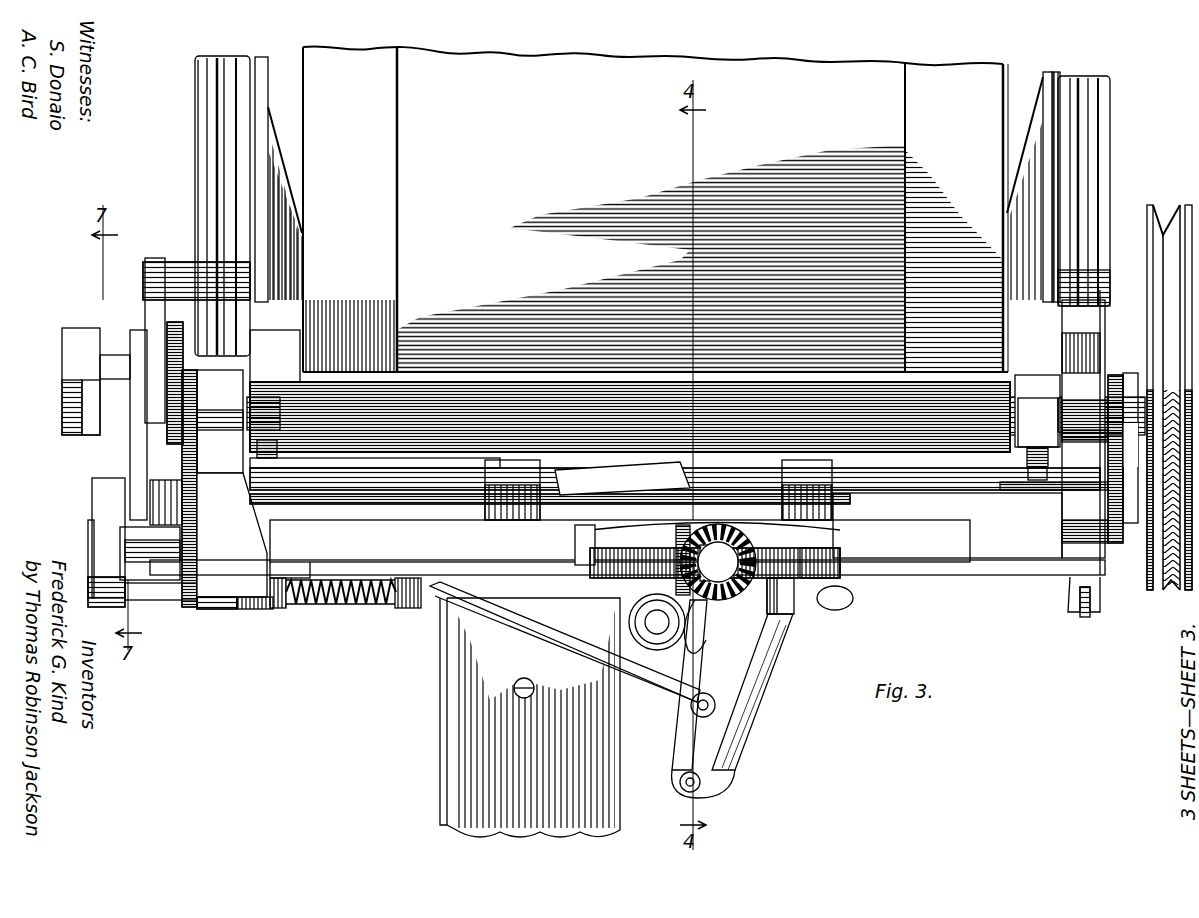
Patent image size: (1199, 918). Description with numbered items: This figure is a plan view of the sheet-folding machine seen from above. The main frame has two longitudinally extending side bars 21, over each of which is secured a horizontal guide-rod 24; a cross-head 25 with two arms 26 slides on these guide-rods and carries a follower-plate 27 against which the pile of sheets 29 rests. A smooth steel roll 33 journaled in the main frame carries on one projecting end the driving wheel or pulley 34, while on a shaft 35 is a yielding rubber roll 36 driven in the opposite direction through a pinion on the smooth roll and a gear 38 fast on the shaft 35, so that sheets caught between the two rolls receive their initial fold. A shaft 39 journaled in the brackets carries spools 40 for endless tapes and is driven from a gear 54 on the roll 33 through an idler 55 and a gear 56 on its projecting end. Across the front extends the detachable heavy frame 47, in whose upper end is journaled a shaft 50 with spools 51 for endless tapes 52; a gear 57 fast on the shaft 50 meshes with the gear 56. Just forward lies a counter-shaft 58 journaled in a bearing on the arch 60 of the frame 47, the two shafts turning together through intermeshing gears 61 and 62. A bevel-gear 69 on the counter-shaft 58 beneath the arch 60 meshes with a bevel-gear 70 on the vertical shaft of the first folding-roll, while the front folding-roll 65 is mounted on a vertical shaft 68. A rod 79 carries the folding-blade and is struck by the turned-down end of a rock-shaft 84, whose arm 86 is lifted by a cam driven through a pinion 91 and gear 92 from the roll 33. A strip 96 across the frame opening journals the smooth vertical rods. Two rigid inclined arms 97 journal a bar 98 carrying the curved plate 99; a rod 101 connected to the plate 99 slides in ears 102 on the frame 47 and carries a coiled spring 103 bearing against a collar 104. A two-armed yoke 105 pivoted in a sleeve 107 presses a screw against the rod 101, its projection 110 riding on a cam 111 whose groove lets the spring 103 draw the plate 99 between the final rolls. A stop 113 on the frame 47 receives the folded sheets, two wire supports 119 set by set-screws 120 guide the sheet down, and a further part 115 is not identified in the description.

The side bars 21 is at (200, 170).
The guide-rods 24 is at (222, 118).
The cross-head 25 is at (292, 330).
The arms 26 is at (262, 88).
The follower-plate 27 is at (1000, 92).
The pile of sheets of paper 29 is at (888, 112).
The roll 33 is at (1053, 401).
The driving wheel or pulley 34 is at (1164, 233).
The shaft 35 is at (1060, 418).
The roll 36 is at (912, 402).
The gear 38 is at (248, 401).
The shaft 39 is at (314, 490).
The spools 40 is at (440, 472).
The frame 47 is at (1025, 568).
The shaft 50 is at (1000, 508).
The spools 51 is at (492, 520).
The endless tapes 52 is at (655, 506).
The gear 54 is at (1115, 372).
The idler 55 is at (1108, 438).
The gear 56 is at (1108, 480).
The gear 57 is at (1110, 545).
The counter-shaft 58 is at (297, 560).
The arch 60 is at (630, 568).
The gear 61 is at (192, 510).
The gear 62 is at (188, 606).
The folding-roll 65 is at (692, 680).
The vertical shaft 68 is at (657, 620).
The bevel-gear 69 is at (690, 528).
The bevel-gear 70 is at (727, 528).
The rod 79 is at (556, 482).
The rock-shaft 84 is at (224, 488).
The arm 86 is at (137, 495).
The pinion 91 is at (170, 445).
The gear 92 is at (168, 330).
The strip 96 is at (600, 532).
The arms 97 is at (760, 668).
The bar 98 is at (695, 790).
The plate 99 is at (712, 685).
The rod 101 is at (533, 626).
The ears 102 is at (210, 610).
The coiled spring 103 is at (322, 606).
The collar 104 is at (272, 608).
The two-armed lever or yoke 105 is at (112, 600).
The sleeve 107 is at (103, 530).
The projection 110 is at (108, 425).
The cam 111 is at (95, 340).
The stop 113 is at (440, 690).
The rack teeth 115 is at (490, 755).
The supports 119 is at (397, 560).
The set-screws 120 is at (838, 596).